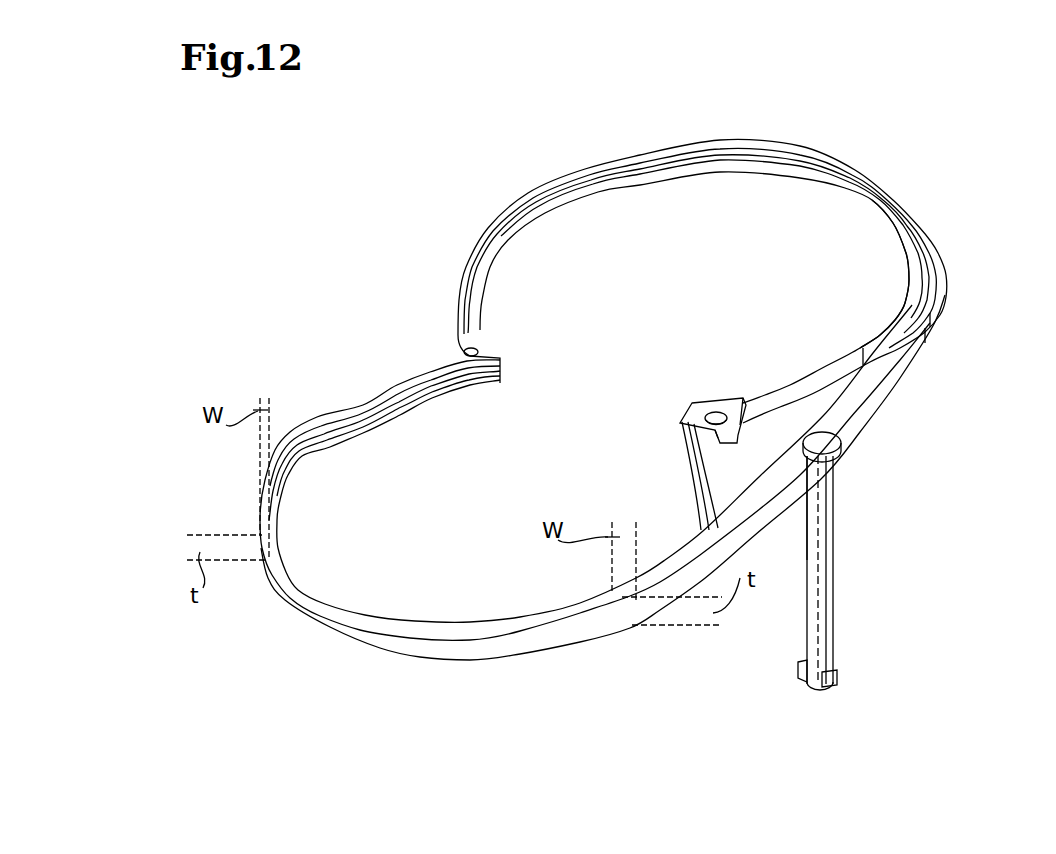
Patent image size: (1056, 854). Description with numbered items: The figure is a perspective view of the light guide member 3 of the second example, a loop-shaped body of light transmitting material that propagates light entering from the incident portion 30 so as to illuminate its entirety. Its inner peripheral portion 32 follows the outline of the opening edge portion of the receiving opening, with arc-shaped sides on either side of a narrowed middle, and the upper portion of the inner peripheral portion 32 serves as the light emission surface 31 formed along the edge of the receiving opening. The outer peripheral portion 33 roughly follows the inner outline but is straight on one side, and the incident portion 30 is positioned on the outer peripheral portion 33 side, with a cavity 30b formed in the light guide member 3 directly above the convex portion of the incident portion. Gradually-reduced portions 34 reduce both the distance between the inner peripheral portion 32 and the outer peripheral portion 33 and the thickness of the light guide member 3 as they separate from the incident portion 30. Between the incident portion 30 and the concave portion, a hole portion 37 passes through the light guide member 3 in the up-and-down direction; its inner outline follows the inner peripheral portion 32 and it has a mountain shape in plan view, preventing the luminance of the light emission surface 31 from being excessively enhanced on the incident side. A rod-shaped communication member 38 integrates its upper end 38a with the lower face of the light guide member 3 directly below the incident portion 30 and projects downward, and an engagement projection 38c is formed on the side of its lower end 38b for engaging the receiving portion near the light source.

The light guide member 3 is at (843, 140).
The incident portion 30 is at (843, 449).
The cavity 30b is at (842, 431).
The light emission surface 31 is at (872, 213).
The inner peripheral portion 32 is at (872, 213).
The outer peripheral portion 33 is at (950, 288).
The gradually-reduced portions 34 is at (761, 146).
The hole portion 37 is at (772, 403).
The communication member 38 is at (822, 610).
The upper end 38a is at (836, 486).
The lower end 38b is at (818, 697).
The engagement projection 38c is at (798, 663).